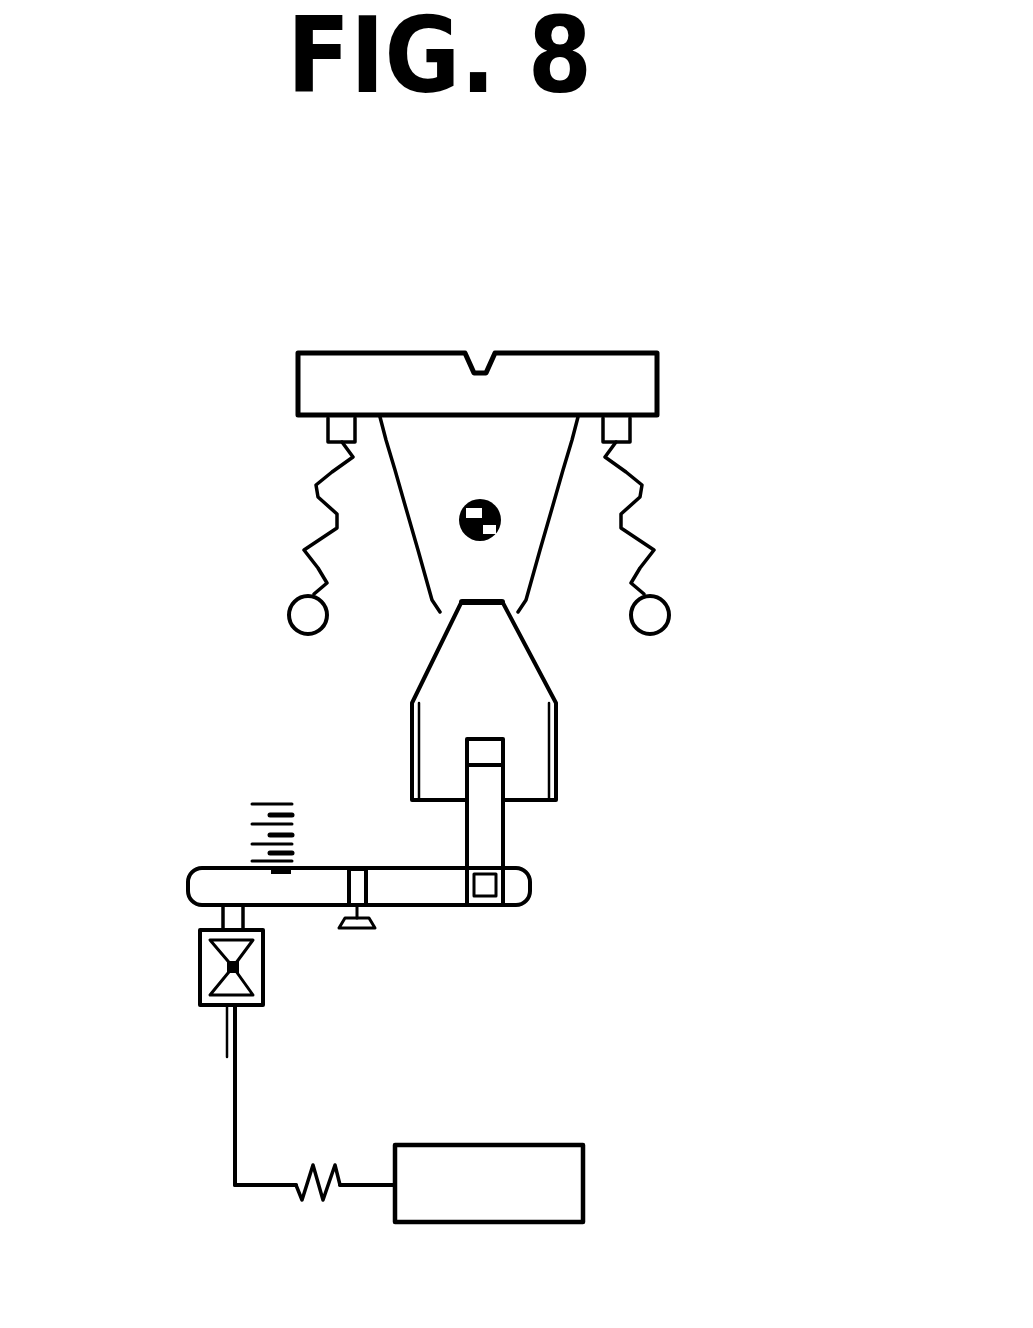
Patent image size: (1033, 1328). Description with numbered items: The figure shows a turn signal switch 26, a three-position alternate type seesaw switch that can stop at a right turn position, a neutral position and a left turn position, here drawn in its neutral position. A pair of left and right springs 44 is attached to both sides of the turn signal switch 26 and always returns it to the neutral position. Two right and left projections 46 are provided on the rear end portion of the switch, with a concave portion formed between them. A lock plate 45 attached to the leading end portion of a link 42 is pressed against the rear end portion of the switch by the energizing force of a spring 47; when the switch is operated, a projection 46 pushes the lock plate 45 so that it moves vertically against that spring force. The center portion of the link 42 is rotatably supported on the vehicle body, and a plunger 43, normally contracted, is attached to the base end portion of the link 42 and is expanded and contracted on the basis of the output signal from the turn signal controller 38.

The upper anvil block 26 is at (607, 367).
The spring 44 is at (303, 506).
The projection 46 is at (438, 615).
The lock plate 45 is at (584, 752).
The link 42 is at (428, 906).
The spring 47 is at (252, 822).
The plunger 43 is at (200, 975).
The turn signal controller 38 is at (583, 1182).